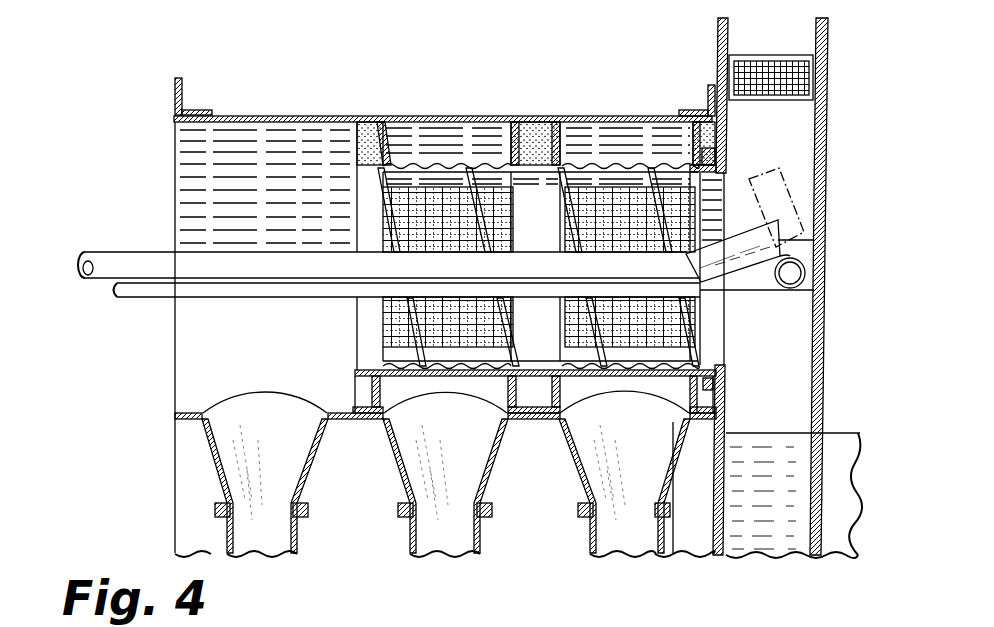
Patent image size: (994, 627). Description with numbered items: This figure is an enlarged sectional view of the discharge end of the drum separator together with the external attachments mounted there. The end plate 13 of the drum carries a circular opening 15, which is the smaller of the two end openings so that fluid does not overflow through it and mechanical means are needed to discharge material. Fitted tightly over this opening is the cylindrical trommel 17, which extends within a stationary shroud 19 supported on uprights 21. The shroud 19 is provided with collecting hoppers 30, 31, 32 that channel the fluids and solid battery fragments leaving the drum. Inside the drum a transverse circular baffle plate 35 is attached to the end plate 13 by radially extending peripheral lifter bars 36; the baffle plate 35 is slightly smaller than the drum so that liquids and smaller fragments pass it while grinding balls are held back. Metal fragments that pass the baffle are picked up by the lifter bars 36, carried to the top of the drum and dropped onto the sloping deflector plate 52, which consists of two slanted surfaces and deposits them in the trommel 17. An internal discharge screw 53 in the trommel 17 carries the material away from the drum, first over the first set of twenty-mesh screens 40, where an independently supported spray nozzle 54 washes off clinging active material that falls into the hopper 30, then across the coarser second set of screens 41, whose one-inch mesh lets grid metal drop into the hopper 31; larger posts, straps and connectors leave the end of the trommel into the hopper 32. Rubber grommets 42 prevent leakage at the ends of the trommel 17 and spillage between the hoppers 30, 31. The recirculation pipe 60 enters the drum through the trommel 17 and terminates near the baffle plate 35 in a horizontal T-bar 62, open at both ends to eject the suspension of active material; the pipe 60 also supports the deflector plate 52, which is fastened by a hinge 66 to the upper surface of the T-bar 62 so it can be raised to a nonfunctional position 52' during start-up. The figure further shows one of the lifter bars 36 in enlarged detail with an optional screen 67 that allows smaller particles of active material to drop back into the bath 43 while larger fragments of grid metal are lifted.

The end plate 13 is at (716, 44).
The circular opening 15 is at (712, 362).
The cylindrical trommel 17 is at (348, 205).
The stationary shroud 19 is at (322, 110).
The uprights 21 is at (184, 95).
The collecting hopper 30 is at (605, 450).
The collecting hopper 31 is at (470, 472).
The collecting hopper 32 is at (292, 462).
The transverse circular baffle plate 35 is at (823, 338).
The peripheral lifter bars 36 is at (795, 104).
The first set of screens 40 is at (672, 332).
The second set of screens 41 is at (400, 318).
The rubber grommets 42 is at (515, 130).
The bath 43 is at (838, 446).
The deflector plate 52 is at (734, 271).
The nonfunctional position of deflector plate 52' is at (815, 207).
The internal discharge screw 53 is at (392, 222).
The spray nozzle 54 is at (148, 290).
The recirculation pipe 60 is at (140, 258).
The horizontal T-bar 62 is at (806, 284).
The hinge 66 is at (812, 242).
The optional screen 67 is at (804, 80).